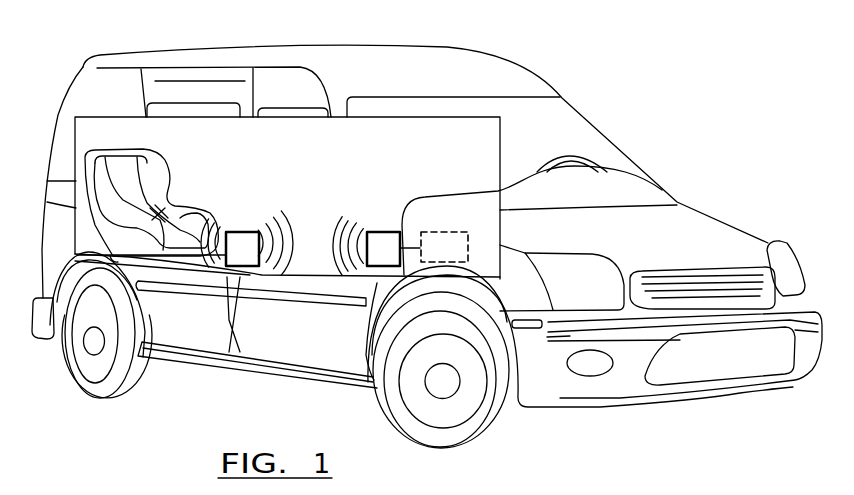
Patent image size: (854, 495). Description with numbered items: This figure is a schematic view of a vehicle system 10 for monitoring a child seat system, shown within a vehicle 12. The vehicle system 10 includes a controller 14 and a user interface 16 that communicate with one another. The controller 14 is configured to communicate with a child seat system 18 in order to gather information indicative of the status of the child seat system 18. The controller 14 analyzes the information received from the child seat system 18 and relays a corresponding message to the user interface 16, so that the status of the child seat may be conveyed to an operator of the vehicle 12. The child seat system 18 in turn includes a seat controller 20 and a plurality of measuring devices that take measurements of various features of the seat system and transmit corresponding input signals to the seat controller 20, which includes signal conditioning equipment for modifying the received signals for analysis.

The vehicle system 10 is at (392, 108).
The vehicle 12 is at (699, 203).
The controller 14 is at (380, 253).
The user interface 16 is at (452, 232).
The child seat system 18 is at (123, 150).
The seat controller 20 is at (247, 258).